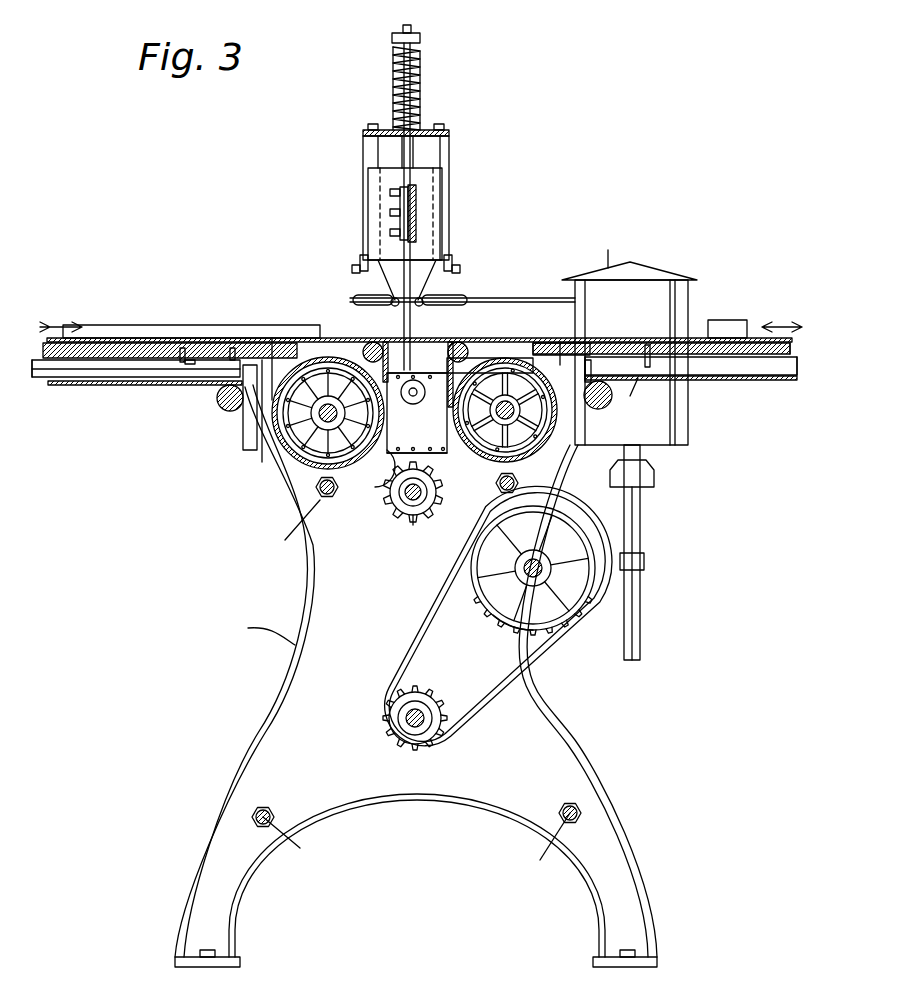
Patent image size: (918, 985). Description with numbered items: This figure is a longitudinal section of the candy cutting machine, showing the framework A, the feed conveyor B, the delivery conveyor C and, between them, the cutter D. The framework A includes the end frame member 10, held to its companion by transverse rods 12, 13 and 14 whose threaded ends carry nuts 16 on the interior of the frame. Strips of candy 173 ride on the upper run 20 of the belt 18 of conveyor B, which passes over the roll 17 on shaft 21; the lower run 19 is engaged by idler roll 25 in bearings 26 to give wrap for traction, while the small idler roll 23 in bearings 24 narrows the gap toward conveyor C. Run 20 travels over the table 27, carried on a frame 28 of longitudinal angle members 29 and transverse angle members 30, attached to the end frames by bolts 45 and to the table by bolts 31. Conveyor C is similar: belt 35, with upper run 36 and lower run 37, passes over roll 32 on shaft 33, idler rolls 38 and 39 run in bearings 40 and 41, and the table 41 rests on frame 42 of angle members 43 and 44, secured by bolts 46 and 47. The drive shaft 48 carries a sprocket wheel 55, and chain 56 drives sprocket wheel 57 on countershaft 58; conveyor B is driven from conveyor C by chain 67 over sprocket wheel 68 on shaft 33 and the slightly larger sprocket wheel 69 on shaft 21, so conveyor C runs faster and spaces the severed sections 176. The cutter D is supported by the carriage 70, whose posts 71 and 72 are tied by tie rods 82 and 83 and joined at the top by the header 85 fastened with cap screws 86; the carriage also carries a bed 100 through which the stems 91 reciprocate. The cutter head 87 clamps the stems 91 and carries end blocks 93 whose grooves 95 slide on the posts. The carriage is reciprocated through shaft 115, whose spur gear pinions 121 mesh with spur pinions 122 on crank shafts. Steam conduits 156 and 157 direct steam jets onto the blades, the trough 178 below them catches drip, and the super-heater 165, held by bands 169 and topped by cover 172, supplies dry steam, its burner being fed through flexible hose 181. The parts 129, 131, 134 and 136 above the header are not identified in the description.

The end frame member 10 is at (275, 745).
The transversely extending rod 12 is at (298, 528).
The transversely extending rod 13 is at (518, 488).
The transversely extending rod 14 is at (416, 844).
The nut 16 is at (327, 497).
The roll 17 is at (262, 455).
The belt 18 is at (163, 377).
The lower run 19 is at (82, 385).
The upper run 20 is at (200, 338).
The shaft 21 is at (300, 455).
The idler roll 23 is at (365, 345).
The bearing 24 is at (355, 335).
The idler roll 25 is at (222, 408).
The bearing 26 is at (243, 430).
The table 27 is at (138, 343).
The frame 28 is at (140, 377).
The longitudinal angle frame member 29 is at (38, 378).
The transverse angle frame member 30 is at (192, 364).
The bolt 31 is at (180, 348).
The roll 32 is at (540, 343).
The shaft 33 is at (465, 455).
The belt 35 is at (745, 380).
The upper run 36 is at (700, 340).
The lower run 37 is at (700, 380).
The idler roll 38 is at (500, 318).
The idler roll 39 is at (612, 402).
The bearing 40 is at (497, 335).
The table 41 is at (758, 340).
The frame 42 is at (780, 376).
The longitudinal angle frame member 43 is at (720, 375).
The transverse angle frame member 44 is at (644, 391).
The bolt 45 is at (233, 348).
The bolt 46 is at (596, 360).
The bolt 47 is at (647, 345).
The drive shaft 48 is at (405, 722).
The sprocket wheel 55 is at (455, 735).
The chain 56 is at (497, 700).
The sprocket wheel 57 is at (545, 645).
The countershaft 58 is at (535, 572).
The chain 67 is at (447, 455).
The sprocket wheel 68 is at (447, 420).
The sprocket wheel 69 is at (415, 400).
The carriage 70 is at (452, 138).
The post 71 is at (365, 148).
The post 72 is at (445, 155).
The tie rod 82 is at (356, 260).
The tie rod 83 is at (458, 262).
The header 85 is at (435, 130).
The cap screw 86 is at (372, 124).
The cutter head 87 is at (398, 202).
The stem 91 is at (412, 240).
The end block 93 is at (375, 172).
The groove 95 is at (375, 183).
The bed 100 is at (470, 318).
The shaft 115 is at (420, 500).
The spur gear pinion 121 is at (413, 525).
The spur pinion 122 is at (375, 490).
The spring 129 is at (420, 72).
The spring guide 131 is at (397, 62).
The cap 134 is at (422, 35).
The nut 136 is at (403, 28).
The steam conduit 156 is at (385, 285).
The steam conduit 157 is at (438, 285).
The super-heater 165 is at (660, 270).
The band 169 is at (680, 440).
The cover 172 is at (607, 245).
The strip of candy 173 is at (110, 325).
The section 176 is at (730, 320).
The trough 178 is at (375, 296).
The flexible hose 181 is at (640, 600).
The framework A is at (259, 633).
The feed conveyor B is at (105, 453).
The delivery conveyor C is at (765, 455).
The cutter D is at (418, 205).